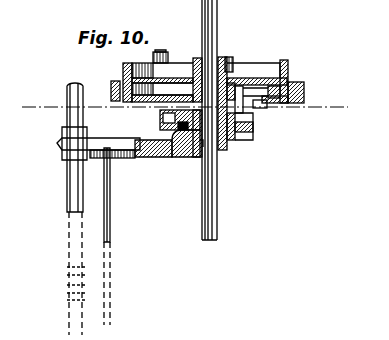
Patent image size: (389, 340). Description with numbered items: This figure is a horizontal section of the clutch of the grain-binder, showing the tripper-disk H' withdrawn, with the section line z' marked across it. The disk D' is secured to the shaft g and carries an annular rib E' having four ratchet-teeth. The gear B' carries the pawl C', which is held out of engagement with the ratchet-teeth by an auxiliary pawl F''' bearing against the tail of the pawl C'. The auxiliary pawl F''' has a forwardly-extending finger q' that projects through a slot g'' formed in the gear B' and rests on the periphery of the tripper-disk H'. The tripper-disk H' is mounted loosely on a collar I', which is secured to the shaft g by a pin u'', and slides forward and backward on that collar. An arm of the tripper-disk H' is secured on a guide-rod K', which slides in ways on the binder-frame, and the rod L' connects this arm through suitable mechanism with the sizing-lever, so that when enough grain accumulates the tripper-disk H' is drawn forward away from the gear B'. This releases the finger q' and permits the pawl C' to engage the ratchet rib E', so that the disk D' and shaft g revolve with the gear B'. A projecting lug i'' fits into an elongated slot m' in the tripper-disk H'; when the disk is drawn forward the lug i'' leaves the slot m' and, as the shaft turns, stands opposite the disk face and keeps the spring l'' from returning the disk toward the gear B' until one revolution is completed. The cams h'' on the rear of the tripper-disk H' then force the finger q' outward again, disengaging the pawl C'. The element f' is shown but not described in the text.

The shaft g is at (201, 120).
The disk D' is at (162, 67).
The annular rib E' is at (98, 119).
The cams h'' is at (167, 121).
The bracket band f' is at (153, 156).
The projecting lug i'' is at (177, 154).
The collar I' is at (192, 146).
The slot m' is at (183, 172).
The guide-rod K' is at (62, 209).
The spring l'' is at (63, 283).
The rod L' is at (117, 236).
The slot g'' is at (263, 103).
The pawl C' is at (264, 68).
The auxiliary pawl F''' is at (257, 66).
The gear B' is at (299, 89).
The opening o' is at (284, 116).
The finger q' is at (252, 134).
The pin u'' is at (239, 146).
The tripper-disk H' is at (246, 142).
The section line z' is at (182, 107).